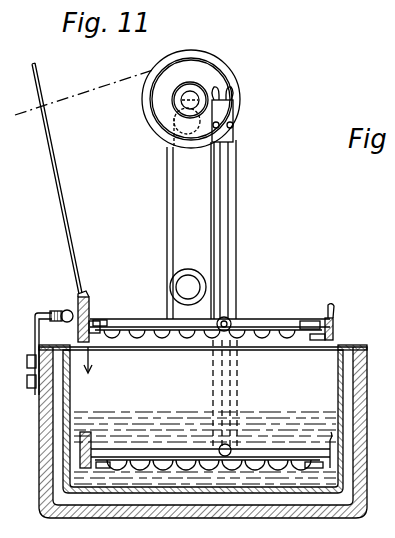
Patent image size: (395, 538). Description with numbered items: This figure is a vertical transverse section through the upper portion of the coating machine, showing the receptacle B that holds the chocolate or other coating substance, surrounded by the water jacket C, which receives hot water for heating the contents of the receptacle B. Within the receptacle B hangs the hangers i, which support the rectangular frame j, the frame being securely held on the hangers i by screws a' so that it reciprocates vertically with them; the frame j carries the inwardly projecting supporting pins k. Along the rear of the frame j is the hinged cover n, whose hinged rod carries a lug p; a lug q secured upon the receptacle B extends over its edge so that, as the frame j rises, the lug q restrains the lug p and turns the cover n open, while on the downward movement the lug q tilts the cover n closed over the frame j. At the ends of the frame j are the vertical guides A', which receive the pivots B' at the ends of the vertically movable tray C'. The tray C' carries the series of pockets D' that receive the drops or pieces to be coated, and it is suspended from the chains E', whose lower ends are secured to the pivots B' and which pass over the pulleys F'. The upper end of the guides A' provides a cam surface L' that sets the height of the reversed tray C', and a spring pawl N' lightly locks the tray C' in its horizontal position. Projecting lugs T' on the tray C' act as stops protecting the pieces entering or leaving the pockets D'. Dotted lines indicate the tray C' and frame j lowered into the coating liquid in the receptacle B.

The receptacle B is at (213, 431).
The water jacket C is at (203, 444).
The projecting lugs T' is at (212, 313).
The supporting pins k is at (94, 340).
The pockets D' is at (181, 351).
The vertically movable tray C' is at (277, 351).
The rectangular frame j is at (262, 321).
The pivots B' is at (235, 311).
The lug q is at (45, 352).
The lug p is at (77, 308).
The hinged cover n is at (57, 178).
The chains E' is at (84, 92).
The pulleys F' is at (191, 95).
The spring pawl N' is at (238, 119).
The cam surface L' is at (212, 229).
The vertical guides A' is at (236, 230).
The hangers i is at (183, 215).
The screws a' is at (188, 287).